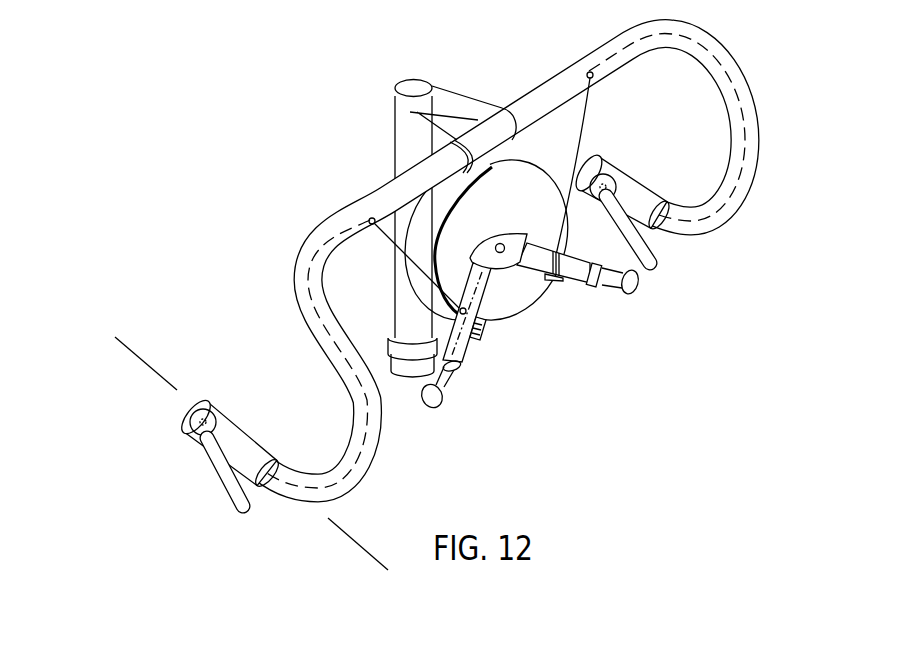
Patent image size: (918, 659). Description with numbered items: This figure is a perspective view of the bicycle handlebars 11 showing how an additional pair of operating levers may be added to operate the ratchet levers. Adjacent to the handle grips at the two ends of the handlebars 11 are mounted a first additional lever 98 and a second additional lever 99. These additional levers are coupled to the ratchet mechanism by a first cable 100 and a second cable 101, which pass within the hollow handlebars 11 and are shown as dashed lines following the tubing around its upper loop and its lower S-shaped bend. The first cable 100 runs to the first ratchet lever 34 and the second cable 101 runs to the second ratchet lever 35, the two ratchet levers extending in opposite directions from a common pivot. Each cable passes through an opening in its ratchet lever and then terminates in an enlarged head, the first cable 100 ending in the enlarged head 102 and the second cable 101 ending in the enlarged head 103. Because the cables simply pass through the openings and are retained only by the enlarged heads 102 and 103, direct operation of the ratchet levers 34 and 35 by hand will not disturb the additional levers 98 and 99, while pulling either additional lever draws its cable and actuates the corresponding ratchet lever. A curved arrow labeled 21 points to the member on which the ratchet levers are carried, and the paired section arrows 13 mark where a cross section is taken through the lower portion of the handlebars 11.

The handlebars 11 is at (729, 58).
The first cable 100 is at (741, 116).
The second cable 101 is at (328, 337).
The reel drum 21 is at (509, 185).
The first additional lever 98 is at (658, 258).
The second additional lever 99 is at (222, 485).
The enlarged head 102 is at (563, 284).
The enlarged head 103 is at (481, 327).
The first ratchet lever 34 is at (624, 295).
The second ratchet lever 35 is at (443, 383).
The section line of FIG. 13 is at (128, 370).